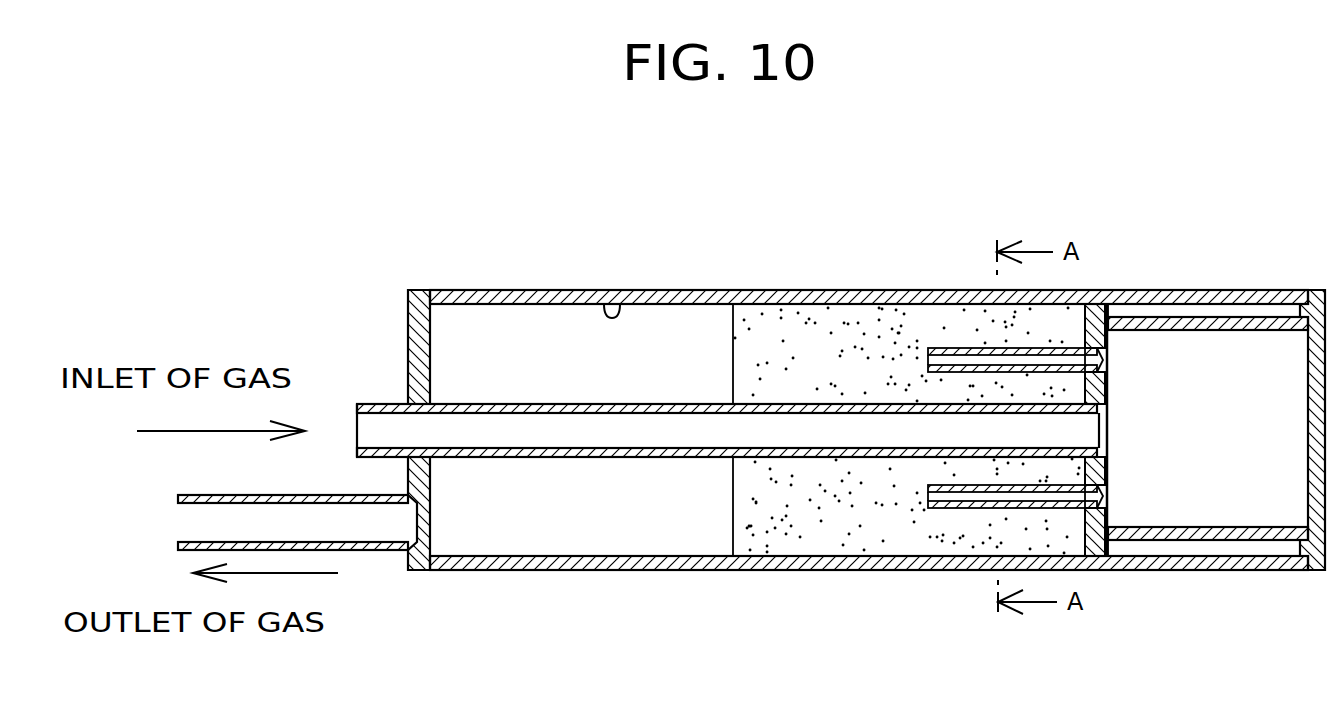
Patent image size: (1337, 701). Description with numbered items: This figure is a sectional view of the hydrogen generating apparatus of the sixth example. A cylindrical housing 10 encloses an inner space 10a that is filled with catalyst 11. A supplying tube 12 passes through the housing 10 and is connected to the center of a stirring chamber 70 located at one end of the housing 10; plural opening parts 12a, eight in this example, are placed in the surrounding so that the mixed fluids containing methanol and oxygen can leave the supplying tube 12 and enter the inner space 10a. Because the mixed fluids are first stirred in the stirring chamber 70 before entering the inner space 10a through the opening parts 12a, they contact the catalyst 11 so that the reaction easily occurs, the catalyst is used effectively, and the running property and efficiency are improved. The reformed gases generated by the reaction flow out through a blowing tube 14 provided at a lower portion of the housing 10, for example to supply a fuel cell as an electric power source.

The housing 10 is at (493, 291).
The inner space 10a is at (620, 304).
The catalyst 11 is at (778, 557).
The supplying tube 12 is at (577, 458).
The opening parts 12a is at (957, 508).
The blowing tube 14 is at (373, 551).
The stirring chamber 70 is at (1210, 500).